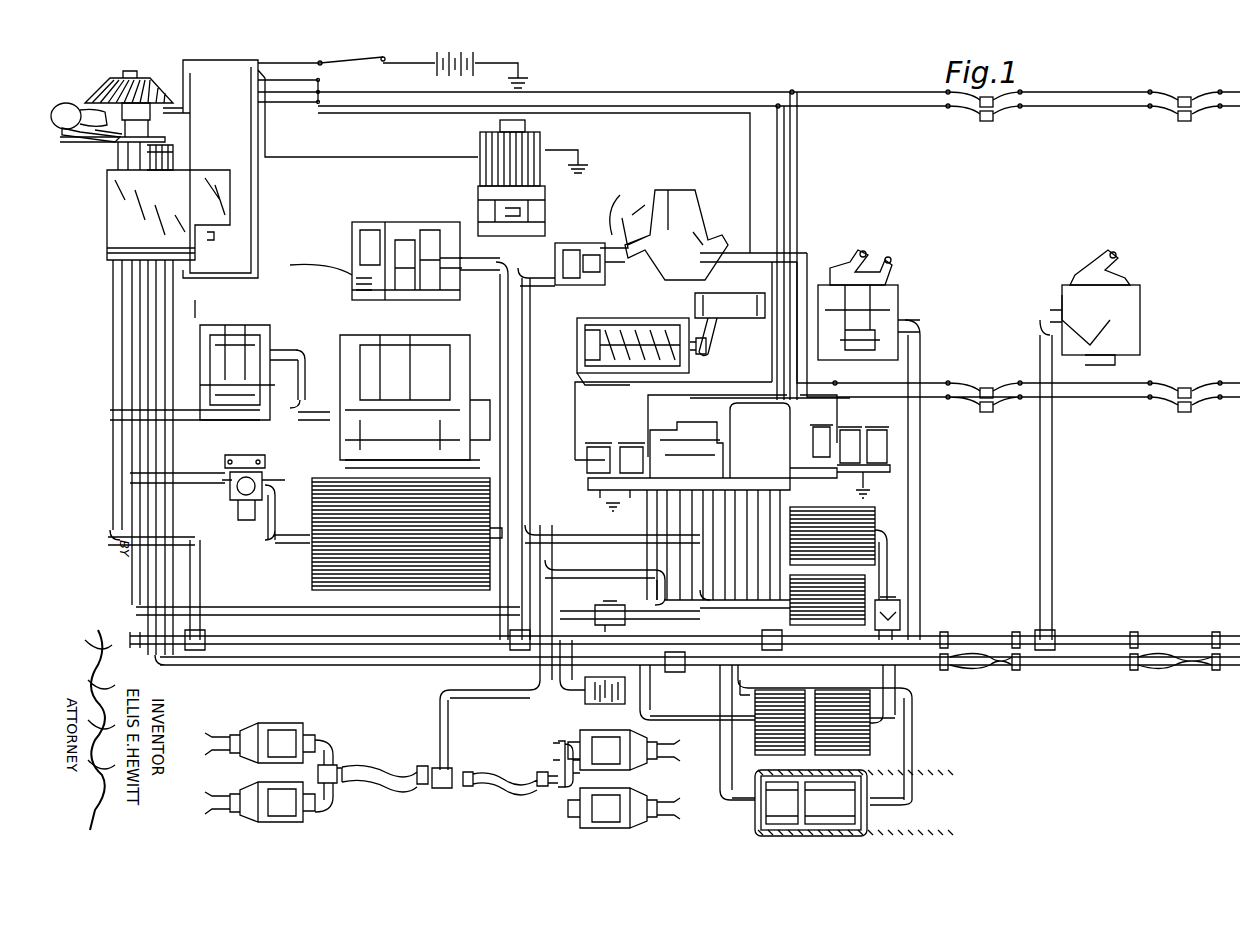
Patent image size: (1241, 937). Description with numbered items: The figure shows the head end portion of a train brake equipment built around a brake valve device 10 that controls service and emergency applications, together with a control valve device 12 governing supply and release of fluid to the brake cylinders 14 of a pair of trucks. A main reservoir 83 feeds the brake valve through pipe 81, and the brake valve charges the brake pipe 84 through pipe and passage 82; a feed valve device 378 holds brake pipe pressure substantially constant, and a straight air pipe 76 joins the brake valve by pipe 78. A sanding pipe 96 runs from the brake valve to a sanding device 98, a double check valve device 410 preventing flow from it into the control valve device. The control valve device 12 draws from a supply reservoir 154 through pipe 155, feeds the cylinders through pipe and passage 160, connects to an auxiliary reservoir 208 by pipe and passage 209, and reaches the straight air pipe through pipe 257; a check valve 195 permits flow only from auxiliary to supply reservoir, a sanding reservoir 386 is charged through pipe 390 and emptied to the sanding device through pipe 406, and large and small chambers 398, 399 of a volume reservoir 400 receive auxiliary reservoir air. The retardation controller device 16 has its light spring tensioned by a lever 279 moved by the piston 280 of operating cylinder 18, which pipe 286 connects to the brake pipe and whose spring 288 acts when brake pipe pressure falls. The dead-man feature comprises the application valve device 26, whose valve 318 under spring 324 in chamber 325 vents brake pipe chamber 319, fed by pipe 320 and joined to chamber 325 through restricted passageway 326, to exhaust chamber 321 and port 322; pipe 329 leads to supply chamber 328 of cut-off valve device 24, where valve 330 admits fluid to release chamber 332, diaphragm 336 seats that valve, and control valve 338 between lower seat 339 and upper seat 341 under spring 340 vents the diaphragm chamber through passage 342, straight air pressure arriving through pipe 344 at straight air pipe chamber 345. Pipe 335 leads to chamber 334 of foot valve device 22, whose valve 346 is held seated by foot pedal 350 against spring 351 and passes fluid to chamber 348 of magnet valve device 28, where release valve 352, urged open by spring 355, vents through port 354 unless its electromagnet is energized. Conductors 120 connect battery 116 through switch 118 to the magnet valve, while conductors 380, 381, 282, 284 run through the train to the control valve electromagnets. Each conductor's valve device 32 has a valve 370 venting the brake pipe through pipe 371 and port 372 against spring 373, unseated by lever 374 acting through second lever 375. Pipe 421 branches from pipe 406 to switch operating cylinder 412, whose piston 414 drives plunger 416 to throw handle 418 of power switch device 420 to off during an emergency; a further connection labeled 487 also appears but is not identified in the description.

The brake valve device 10 is at (197, 167).
The control valve device 12 is at (590, 493).
The brake cylinders 14 is at (305, 760).
The retardation controller device 16 is at (702, 205).
The operating cylinder 18 is at (588, 243).
The foot valve device 22 is at (372, 222).
The cut-off valve device 24 is at (360, 360).
The application valve device 26 is at (270, 338).
The magnet valve device 28 is at (545, 153).
The conductor's valve device 32 is at (910, 298).
The straight air pipe 76 is at (305, 662).
The pipe 78 is at (182, 330).
The pipe 81 is at (150, 388).
The pipe and passage 82 is at (135, 322).
The main reservoir 83 is at (318, 478).
The brake pipe 84 is at (410, 650).
The sanding pipe 96 is at (140, 272).
The sanding device 98 is at (645, 690).
The battery 116 is at (478, 56).
The switch 118 is at (378, 60).
The conductors 120 is at (190, 60).
The supply reservoir 154 is at (870, 740).
The pipe 155 is at (645, 580).
The pipe and passage 160 is at (690, 548).
The check valve 195 is at (905, 612).
The auxiliary reservoir 208 is at (880, 510).
The pipe and passage 209 is at (760, 540).
The pipe 257 is at (680, 590).
The lever 279 is at (622, 200).
The piston 280 is at (575, 243).
The conductor 282 is at (810, 250).
The conductor 284 is at (828, 250).
The pipe 286 is at (565, 300).
The spring 288 is at (598, 240).
The valve 318 is at (300, 365).
The brake pipe chamber 319 is at (232, 418).
The pipe 320 is at (195, 420).
The exhaust chamber 321 is at (260, 418).
The port 322 is at (268, 400).
The spring 324 is at (260, 365).
The chamber 325 is at (210, 318).
The restricted passageway 326 is at (215, 365).
The supply chamber 328 is at (350, 448).
The pipe 329 is at (318, 394).
The valve 330 is at (481, 393).
The release chamber 332 is at (460, 450).
The chamber 334 is at (448, 236).
The pipe 335 is at (500, 290).
The diaphragm 336 is at (360, 388).
The control valve 338 is at (448, 360).
The lower seat 339 is at (444, 393).
The spring 340 is at (445, 348).
The upper seat 341 is at (440, 338).
The passage 342 is at (390, 340).
The pipe 344 is at (312, 298).
The straight air pipe chamber 345 is at (450, 375).
The valve 346 is at (405, 225).
The chamber 348 is at (538, 210).
The foot pedal 350 is at (300, 262).
The spring 351 is at (366, 298).
The release valve 352 is at (555, 186).
The port 354 is at (480, 195).
The spring 355 is at (515, 252).
The valve 370 is at (905, 318).
The pipe 371 is at (925, 355).
The port 372 is at (819, 364).
The spring 373 is at (881, 368).
The lever 374 is at (865, 262).
The second lever 375 is at (875, 278).
The feed valve device 378 is at (232, 485).
The conductor 380 is at (1125, 85).
The conductor 381 is at (1128, 106).
The sanding reservoir 386 is at (870, 582).
The pipe 390 is at (700, 522).
The large chamber 398 is at (860, 818).
The small chamber 399 is at (752, 818).
The volume reservoir 400 is at (870, 775).
The pipe 406 is at (640, 556).
The double check valve device 410 is at (598, 603).
The switch operating cylinder 412 is at (625, 318).
The piston 414 is at (590, 335).
The plunger 416 is at (688, 342).
The handle 418 is at (714, 342).
The power switch device 420 is at (745, 300).
The pipe 421 is at (578, 430).
The pipe 487 is at (756, 576).